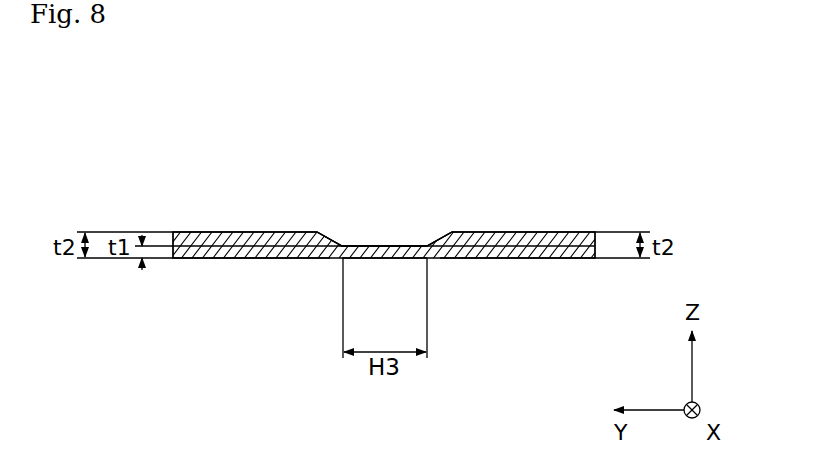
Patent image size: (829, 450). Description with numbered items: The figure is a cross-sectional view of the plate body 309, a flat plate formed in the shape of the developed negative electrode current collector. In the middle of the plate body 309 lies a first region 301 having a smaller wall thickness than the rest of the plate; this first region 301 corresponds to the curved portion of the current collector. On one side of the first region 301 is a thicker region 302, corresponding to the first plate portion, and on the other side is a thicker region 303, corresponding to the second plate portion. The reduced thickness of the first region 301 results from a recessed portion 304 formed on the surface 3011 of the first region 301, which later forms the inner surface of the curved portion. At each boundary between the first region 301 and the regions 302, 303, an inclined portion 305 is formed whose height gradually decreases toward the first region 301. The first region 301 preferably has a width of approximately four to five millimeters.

The plate body 309 is at (431, 127).
The first region 301 is at (384, 254).
The surface of the first region 3011 is at (382, 246).
The region 302 is at (235, 258).
The region 303 is at (564, 244).
The recessed portion 304 is at (404, 242).
The inclined portion 305 is at (310, 244).